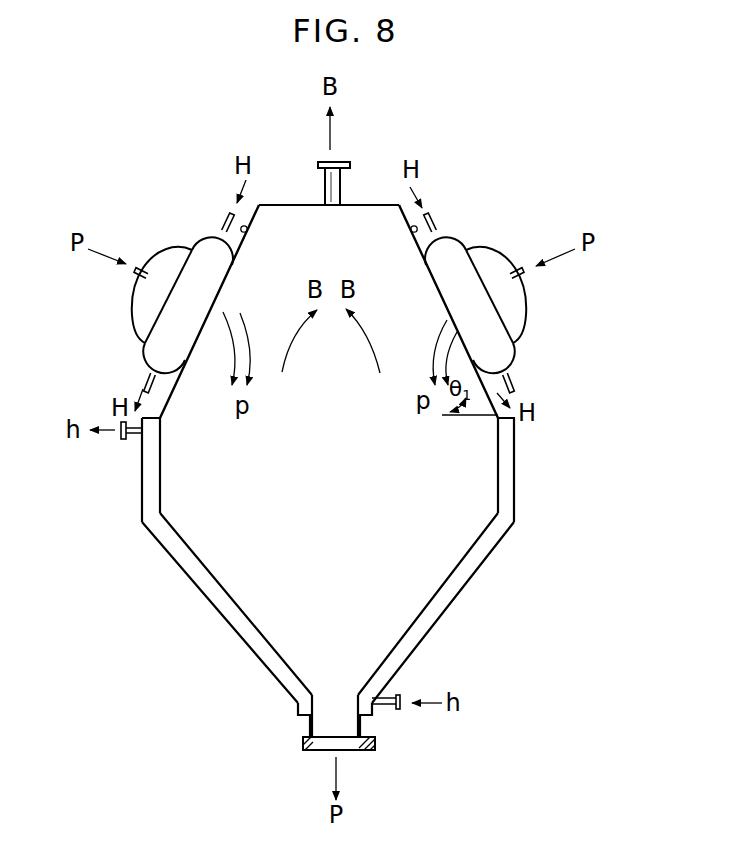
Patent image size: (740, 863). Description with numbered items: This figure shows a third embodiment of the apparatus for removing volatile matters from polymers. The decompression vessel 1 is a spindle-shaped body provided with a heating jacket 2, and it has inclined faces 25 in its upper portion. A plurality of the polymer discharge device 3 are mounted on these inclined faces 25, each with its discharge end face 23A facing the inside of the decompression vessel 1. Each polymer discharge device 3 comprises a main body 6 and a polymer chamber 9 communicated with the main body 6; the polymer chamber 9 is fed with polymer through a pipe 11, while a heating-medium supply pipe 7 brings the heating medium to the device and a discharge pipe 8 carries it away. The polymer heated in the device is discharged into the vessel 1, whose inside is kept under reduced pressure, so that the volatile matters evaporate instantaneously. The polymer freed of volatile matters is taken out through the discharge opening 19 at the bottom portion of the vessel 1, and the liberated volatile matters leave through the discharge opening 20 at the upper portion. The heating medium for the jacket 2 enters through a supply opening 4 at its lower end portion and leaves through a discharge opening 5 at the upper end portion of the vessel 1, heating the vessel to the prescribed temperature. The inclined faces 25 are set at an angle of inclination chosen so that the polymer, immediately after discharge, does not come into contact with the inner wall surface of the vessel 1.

The decompression vessel 1 is at (308, 442).
The heating jacket 2 is at (195, 594).
The polymer discharge device 3 is at (321, 275).
The supply opening 4 is at (399, 711).
The discharge opening 5 is at (123, 441).
The main body 6 is at (190, 262).
The heating-medium supply pipe 7 is at (225, 222).
The discharge pipe 8 is at (150, 375).
The polymer chamber 9 is at (132, 314).
The pipe 11 is at (134, 273).
The discharge opening 19 is at (301, 738).
The discharge opening 20 is at (348, 164).
The discharge end face 23A is at (223, 288).
The inclined faces 25 is at (248, 231).